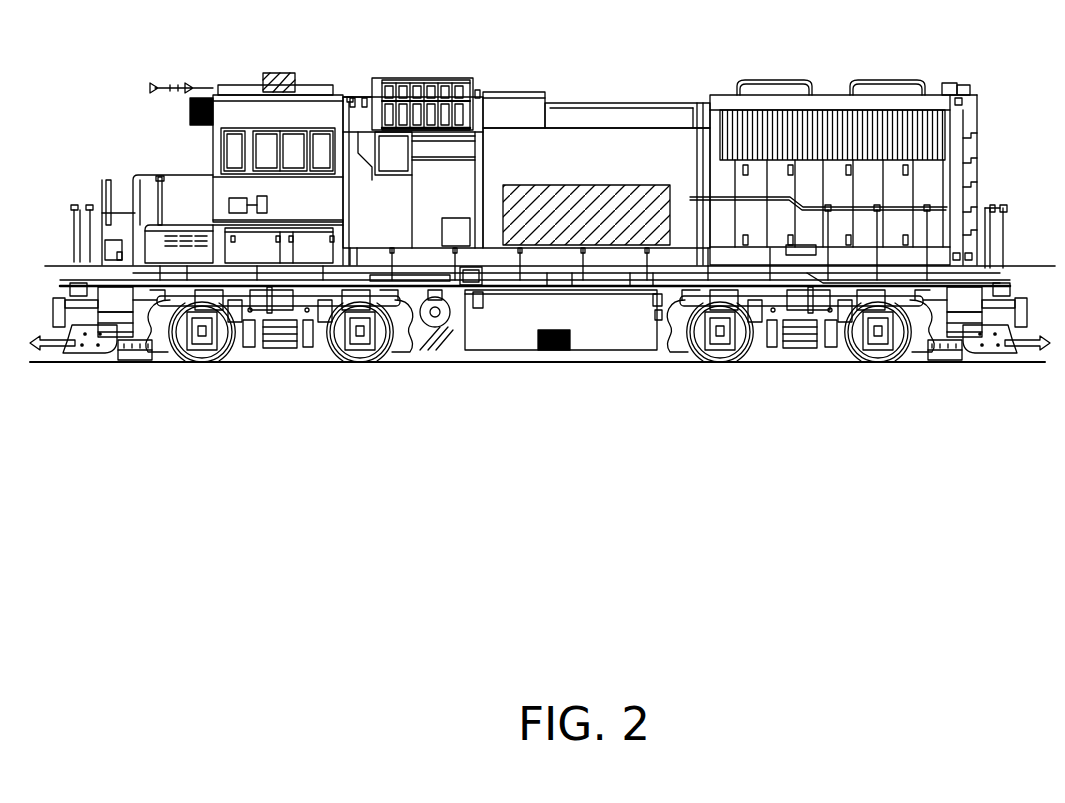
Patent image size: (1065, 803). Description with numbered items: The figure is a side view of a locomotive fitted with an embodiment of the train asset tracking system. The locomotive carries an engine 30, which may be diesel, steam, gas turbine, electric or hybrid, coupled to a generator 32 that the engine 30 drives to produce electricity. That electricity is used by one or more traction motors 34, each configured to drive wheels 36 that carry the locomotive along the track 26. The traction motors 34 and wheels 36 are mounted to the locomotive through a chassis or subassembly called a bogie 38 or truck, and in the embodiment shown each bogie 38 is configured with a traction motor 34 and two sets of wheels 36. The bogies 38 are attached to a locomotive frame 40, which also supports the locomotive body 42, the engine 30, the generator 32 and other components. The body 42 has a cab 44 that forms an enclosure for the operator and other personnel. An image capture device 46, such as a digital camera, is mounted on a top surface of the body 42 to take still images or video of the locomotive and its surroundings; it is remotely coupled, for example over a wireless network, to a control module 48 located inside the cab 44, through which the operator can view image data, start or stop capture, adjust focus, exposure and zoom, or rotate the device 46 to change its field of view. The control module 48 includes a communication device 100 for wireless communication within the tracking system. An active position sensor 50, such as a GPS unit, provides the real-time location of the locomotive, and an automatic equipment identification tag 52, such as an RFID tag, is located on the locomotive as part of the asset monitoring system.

The track 26 is at (642, 363).
The engine 30 is at (947, 145).
The generator 32 is at (585, 185).
The traction motor 34 is at (270, 350).
The wheels 36 is at (187, 357).
The bogie 38 is at (385, 367).
The locomotive frame 40 is at (405, 287).
The locomotive body 42 is at (722, 102).
The cab 44 is at (246, 108).
The image capture device 46 is at (278, 73).
The control module 48 is at (229, 205).
The active position sensor 50 is at (192, 108).
The automatic equipment identification tag 52 is at (560, 352).
The communication device 100 is at (262, 196).